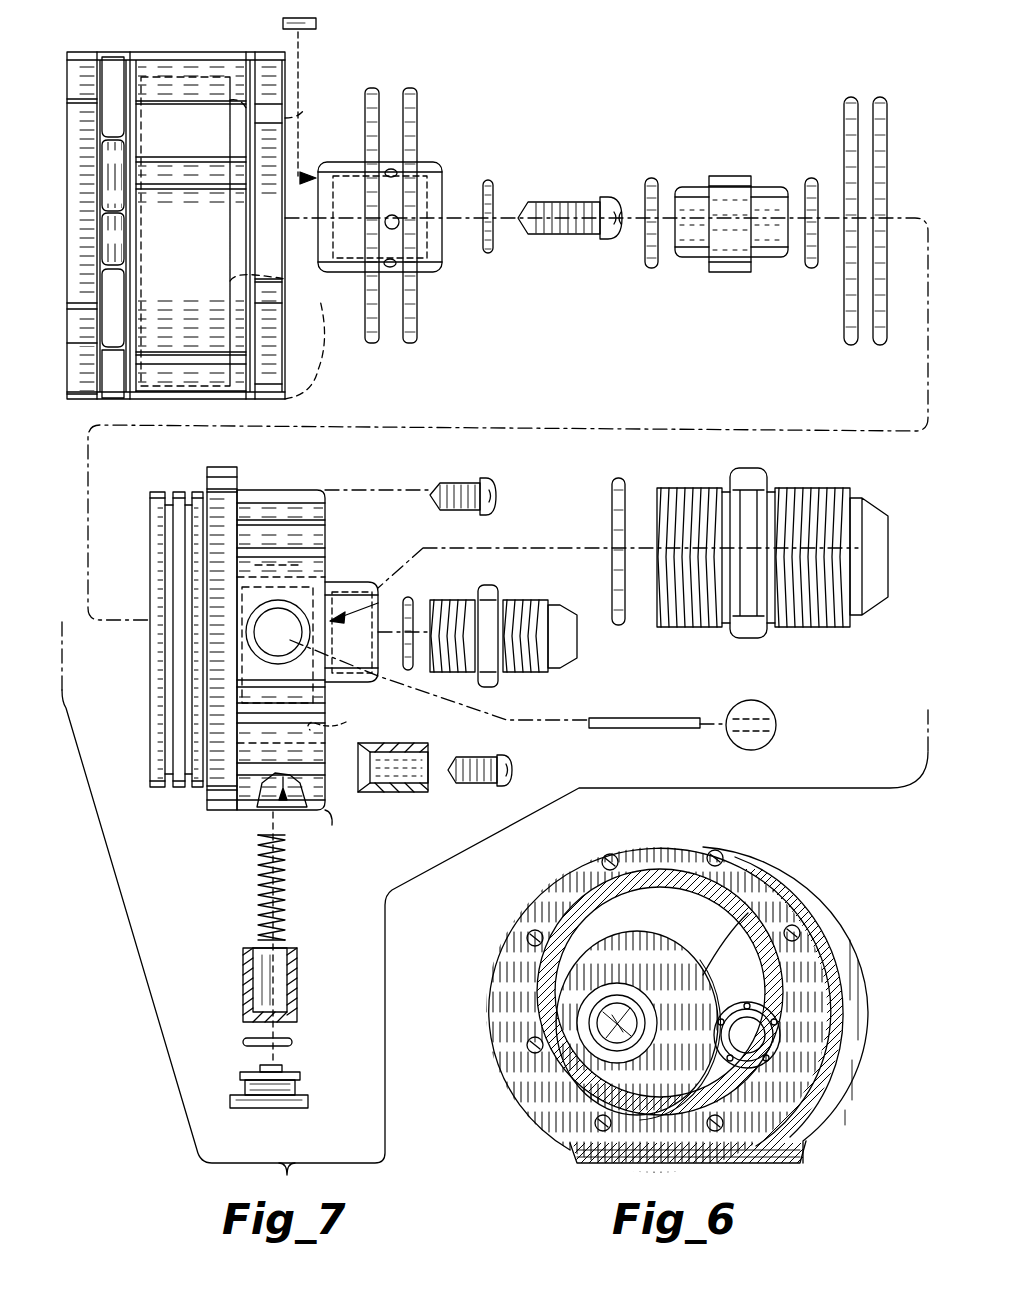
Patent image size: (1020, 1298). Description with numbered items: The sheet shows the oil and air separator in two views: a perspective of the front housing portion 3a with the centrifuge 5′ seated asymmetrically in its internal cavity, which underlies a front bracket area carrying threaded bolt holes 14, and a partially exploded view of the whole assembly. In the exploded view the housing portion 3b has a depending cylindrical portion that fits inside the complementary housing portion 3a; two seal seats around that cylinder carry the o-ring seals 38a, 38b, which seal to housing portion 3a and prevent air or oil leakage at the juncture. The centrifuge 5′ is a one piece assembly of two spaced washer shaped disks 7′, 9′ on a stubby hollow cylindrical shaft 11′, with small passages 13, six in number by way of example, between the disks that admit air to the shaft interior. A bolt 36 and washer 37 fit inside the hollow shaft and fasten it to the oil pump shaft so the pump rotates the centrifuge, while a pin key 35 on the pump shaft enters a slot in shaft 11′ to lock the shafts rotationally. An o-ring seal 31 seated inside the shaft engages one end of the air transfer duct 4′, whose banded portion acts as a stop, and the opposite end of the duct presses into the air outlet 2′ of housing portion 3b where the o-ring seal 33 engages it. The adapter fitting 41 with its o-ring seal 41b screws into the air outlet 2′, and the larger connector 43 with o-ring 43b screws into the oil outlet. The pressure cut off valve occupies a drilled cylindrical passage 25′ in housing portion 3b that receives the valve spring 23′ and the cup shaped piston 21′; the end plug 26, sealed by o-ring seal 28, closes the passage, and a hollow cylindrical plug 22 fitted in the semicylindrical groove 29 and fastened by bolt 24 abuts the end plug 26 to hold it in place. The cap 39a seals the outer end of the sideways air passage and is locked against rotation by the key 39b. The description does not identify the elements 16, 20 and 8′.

In FIG. 7, the housing portion 3a is at (163, 52).
In FIG. 6, the housing portion 3a is at (823, 943).
In FIG. 7, the pin key 35 is at (283, 22).
In FIG. 7, the threaded bolt holes 14 is at (290, 120).
In FIG. 7, the centrifuge 5′ is at (396, 223).
In FIG. 6, the centrifuge 5′ is at (588, 950).
In FIG. 7, the cylindrical shaft 11′ is at (356, 162).
In FIG. 7, the passages 13 is at (399, 220).
In FIG. 7, the disk 7′ is at (370, 345).
In FIG. 7, the disk 9′ is at (413, 345).
In FIG. 7, the washer 37 is at (489, 180).
In FIG. 7, the bolt 36 is at (592, 208).
In FIG. 7, the O-ring seal 31 is at (651, 178).
In FIG. 7, the air transfer duct 4′ is at (737, 176).
In FIG. 7, the O-ring seal 33 is at (812, 178).
In FIG. 7, the O-ring seal 38a is at (844, 100).
In FIG. 7, the O-ring seal 38b is at (905, 86).
In FIG. 7, the housing portion 3b is at (280, 650).
In FIG. 7, the outlet port 20 is at (278, 632).
In FIG. 7, the air outlet 2′ is at (395, 585).
In FIG. 7, the cylindrical passage 25′ is at (344, 716).
In FIG. 7, the semicylindrical groove 29 is at (336, 828).
In FIG. 7, the screw 16 is at (470, 480).
In FIG. 7, the O-ring seal 43b is at (615, 485).
In FIG. 7, the connector 43 is at (768, 484).
In FIG. 7, the O-ring seal 41b is at (412, 598).
In FIG. 7, the adapter fitting 41 is at (492, 590).
In FIG. 7, the key 39b is at (625, 718).
In FIG. 7, the cap 39a is at (776, 722).
In FIG. 7, the hollow cylindrical plug 22 is at (380, 792).
In FIG. 7, the bolt 24 is at (468, 786).
In FIG. 7, the valve spring 23′ is at (288, 900).
In FIG. 7, the piston 21′ is at (297, 1000).
In FIG. 7, the O-ring seal 28 is at (292, 1044).
In FIG. 7, the end plug 26 is at (308, 1098).
In FIG. 6, the pumping chamber 8′ is at (700, 917).